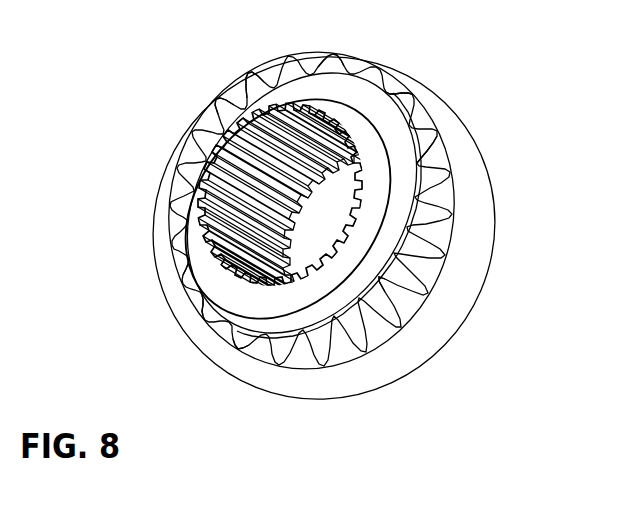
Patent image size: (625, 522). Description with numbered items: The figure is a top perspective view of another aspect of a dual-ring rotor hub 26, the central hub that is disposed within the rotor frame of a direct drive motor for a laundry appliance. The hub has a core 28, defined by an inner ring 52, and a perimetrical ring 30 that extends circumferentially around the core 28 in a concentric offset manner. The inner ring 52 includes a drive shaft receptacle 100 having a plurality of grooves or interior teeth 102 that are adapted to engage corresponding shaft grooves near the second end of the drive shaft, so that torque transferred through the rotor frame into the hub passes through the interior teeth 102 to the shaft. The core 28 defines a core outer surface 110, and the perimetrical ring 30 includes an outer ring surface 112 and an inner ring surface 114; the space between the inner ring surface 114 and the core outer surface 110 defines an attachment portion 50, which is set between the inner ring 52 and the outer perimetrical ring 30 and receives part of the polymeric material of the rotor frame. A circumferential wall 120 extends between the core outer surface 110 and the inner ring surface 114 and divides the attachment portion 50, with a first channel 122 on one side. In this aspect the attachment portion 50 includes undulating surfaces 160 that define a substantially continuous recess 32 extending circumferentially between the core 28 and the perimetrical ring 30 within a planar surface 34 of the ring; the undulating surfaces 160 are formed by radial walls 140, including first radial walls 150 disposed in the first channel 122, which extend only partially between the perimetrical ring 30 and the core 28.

The dual-ring rotor hub 26 is at (167, 103).
The core 28 is at (262, 83).
The perimetrical ring 30 is at (393, 387).
The recess 32 is at (240, 340).
The planar surface 34 is at (167, 245).
The attachment portion 50 is at (200, 307).
The inner ring 52 is at (233, 113).
The drive shaft receptacle 100 is at (205, 157).
The interior teeth 102 is at (213, 183).
The core outer surface 110 is at (390, 248).
The outer ring surface 112 is at (473, 200).
The inner ring surface 114 is at (333, 63).
The circumferential wall 120 is at (430, 190).
The first channel 122 is at (377, 313).
The radial walls 140 is at (293, 350).
The first radial walls 150 is at (397, 93).
The undulating surfaces 160 is at (160, 283).